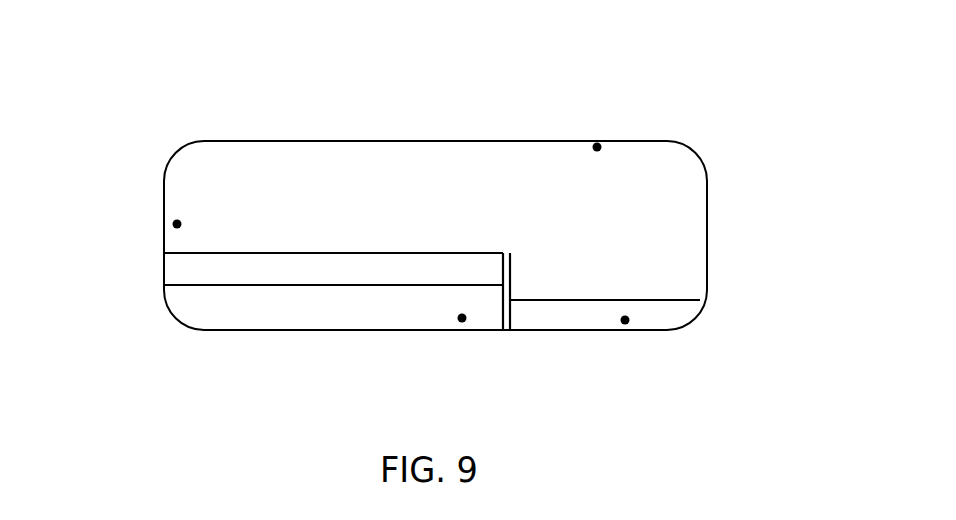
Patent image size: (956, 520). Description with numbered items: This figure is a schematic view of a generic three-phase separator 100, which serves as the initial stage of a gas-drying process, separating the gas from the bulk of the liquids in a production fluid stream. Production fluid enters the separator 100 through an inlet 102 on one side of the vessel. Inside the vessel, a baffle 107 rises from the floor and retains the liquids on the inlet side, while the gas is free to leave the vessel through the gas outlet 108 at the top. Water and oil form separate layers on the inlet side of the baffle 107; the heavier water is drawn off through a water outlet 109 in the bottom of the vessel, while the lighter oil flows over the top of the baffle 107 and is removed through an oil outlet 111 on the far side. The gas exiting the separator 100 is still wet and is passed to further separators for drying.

The three-phase separator 100 is at (715, 108).
The inlet 102 is at (176, 223).
The baffle 107 is at (513, 276).
The gas outlet 108 is at (597, 143).
The water outlet 109 is at (455, 325).
The oil outlet 111 is at (620, 325).